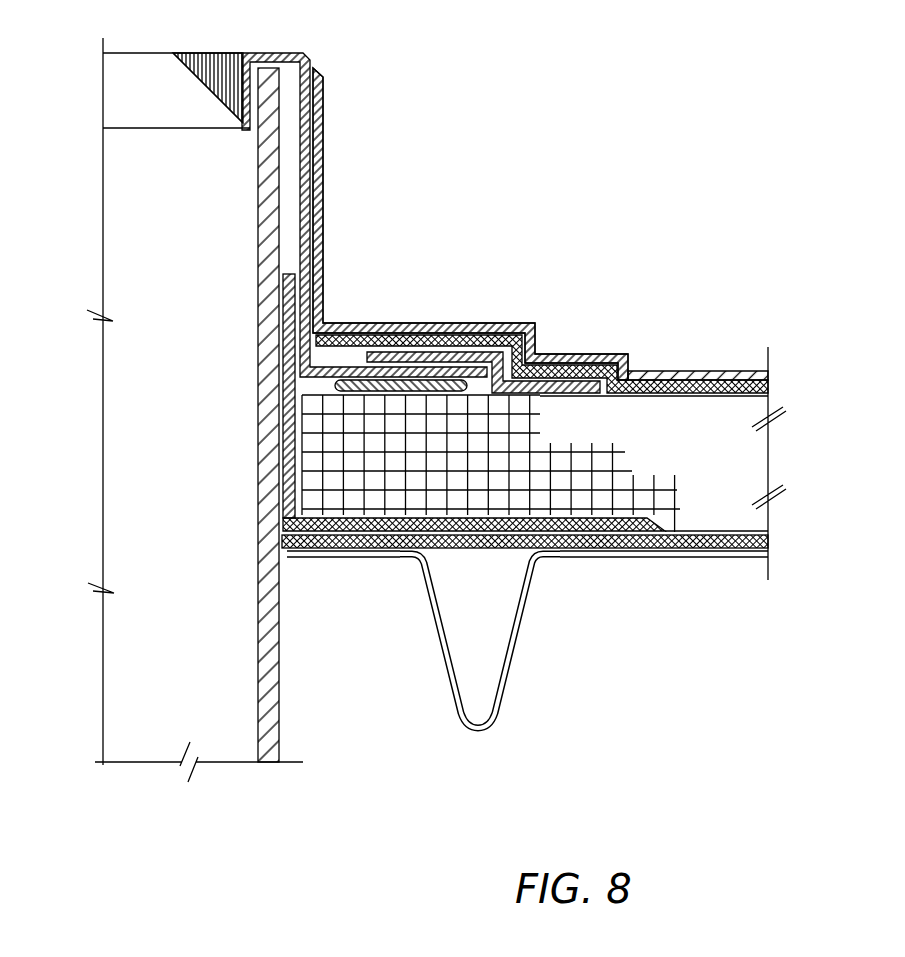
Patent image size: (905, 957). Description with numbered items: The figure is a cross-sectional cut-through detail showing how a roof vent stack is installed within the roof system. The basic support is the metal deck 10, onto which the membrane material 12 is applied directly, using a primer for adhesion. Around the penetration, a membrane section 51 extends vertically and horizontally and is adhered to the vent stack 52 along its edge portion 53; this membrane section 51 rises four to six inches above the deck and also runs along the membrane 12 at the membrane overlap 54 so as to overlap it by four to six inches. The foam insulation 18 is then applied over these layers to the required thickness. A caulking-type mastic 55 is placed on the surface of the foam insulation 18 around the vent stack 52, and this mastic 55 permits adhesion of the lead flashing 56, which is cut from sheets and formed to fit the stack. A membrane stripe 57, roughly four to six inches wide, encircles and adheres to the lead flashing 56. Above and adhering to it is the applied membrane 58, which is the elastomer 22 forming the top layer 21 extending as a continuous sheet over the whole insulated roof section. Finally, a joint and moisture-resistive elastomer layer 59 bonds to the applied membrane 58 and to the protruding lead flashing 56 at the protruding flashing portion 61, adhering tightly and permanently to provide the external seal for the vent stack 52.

The metal deck 10 is at (494, 738).
The membrane material 12 is at (446, 567).
The foam insulation 18 is at (567, 463).
The top layer 21 is at (690, 362).
The elastomer 22 is at (788, 373).
The membrane section 51 is at (283, 487).
The vent stack 52 is at (111, 472).
The edge portion 53 is at (291, 292).
The membrane overlap 54 is at (618, 545).
The mastic 55 is at (325, 390).
The lead flashing 56 is at (364, 190).
The membrane stripe 57 is at (501, 348).
The applied membrane 58 is at (590, 359).
The elastomer layer 59 is at (334, 169).
The protruding flashing portion 61 is at (324, 106).